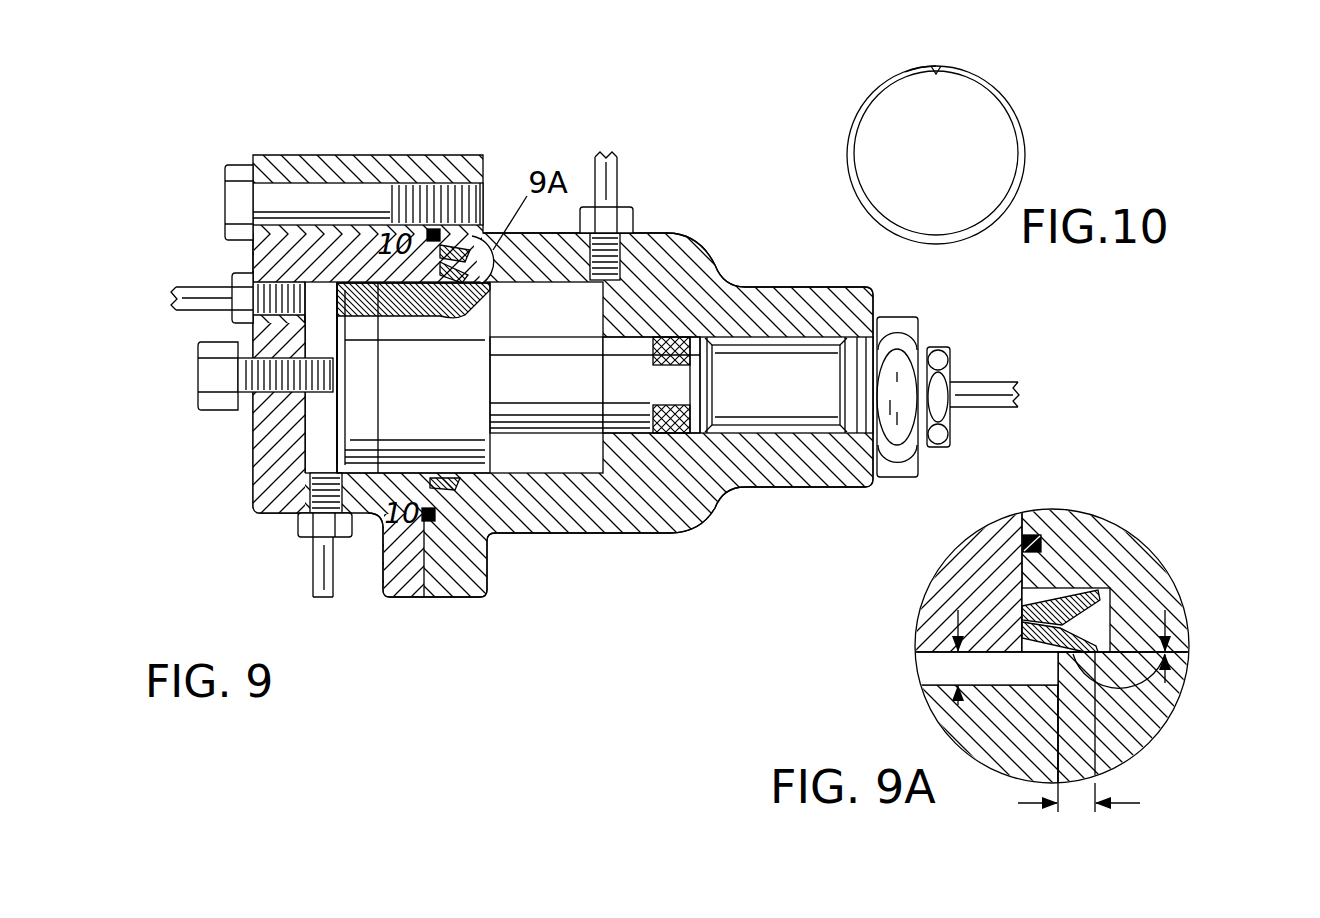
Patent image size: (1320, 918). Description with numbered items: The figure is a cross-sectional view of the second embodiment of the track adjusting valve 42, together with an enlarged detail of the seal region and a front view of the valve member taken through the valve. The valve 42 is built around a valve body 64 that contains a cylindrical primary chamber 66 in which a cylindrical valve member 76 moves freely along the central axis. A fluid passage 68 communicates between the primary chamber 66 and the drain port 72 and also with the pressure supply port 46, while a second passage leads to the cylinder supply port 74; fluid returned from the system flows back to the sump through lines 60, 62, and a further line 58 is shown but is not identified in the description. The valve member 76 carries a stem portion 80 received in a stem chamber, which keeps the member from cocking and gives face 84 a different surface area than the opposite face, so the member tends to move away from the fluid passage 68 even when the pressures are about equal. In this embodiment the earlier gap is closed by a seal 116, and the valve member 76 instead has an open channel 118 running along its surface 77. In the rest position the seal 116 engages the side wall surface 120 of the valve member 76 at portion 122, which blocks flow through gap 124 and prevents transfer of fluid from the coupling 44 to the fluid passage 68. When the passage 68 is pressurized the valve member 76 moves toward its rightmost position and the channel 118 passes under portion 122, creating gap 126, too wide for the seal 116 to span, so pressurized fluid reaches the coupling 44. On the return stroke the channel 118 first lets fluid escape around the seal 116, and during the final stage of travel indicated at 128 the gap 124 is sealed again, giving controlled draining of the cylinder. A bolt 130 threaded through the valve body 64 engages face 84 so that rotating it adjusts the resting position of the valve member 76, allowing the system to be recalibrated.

In FIG. 9, the track adjustment valve 42 is at (578, 558).
In FIG. 9, the coupling 44 is at (617, 178).
In FIG. 9, the pressure supply port 46 is at (300, 547).
In FIG. 9, the fluid line 58 is at (337, 577).
In FIG. 9, the line 60 is at (190, 287).
In FIG. 9, the line 62 is at (977, 383).
In FIG. 9, the valve body 64 is at (265, 418).
In FIG. 9, the primary chamber 66 is at (528, 322).
In FIG. 9, the fluid passage 68 is at (320, 427).
In FIG. 9, the drain port 72 is at (225, 266).
In FIG. 9, the cylinder supply port 74 is at (650, 212).
In FIG. 9, the valve member 76 is at (405, 413).
In FIG. 10, the valve member 76 is at (912, 158).
In FIG. 9A, the valve member 76 is at (997, 745).
In FIG. 10, the surface 77 is at (905, 72).
In FIG. 9, the stem portion 80 is at (535, 398).
In FIG. 9, the face 84 is at (325, 432).
In FIG. 9, the seal 116 is at (470, 245).
In FIG. 9A, the seal 116 is at (1057, 613).
In FIG. 9, the open channel 118 is at (353, 283).
In FIG. 10, the open channel 118 is at (938, 72).
In FIG. 9A, the open channel 118 is at (937, 668).
In FIG. 9A, the side wall surface 120 is at (1160, 708).
In FIG. 9A, the portion 122 is at (1105, 745).
In FIG. 9A, the gap 124 is at (1165, 606).
In FIG. 9A, the gap 126 is at (960, 612).
In FIG. 9A, the final stages of leftward travel 128 is at (1072, 800).
In FIG. 9, the bolt 130 is at (198, 380).